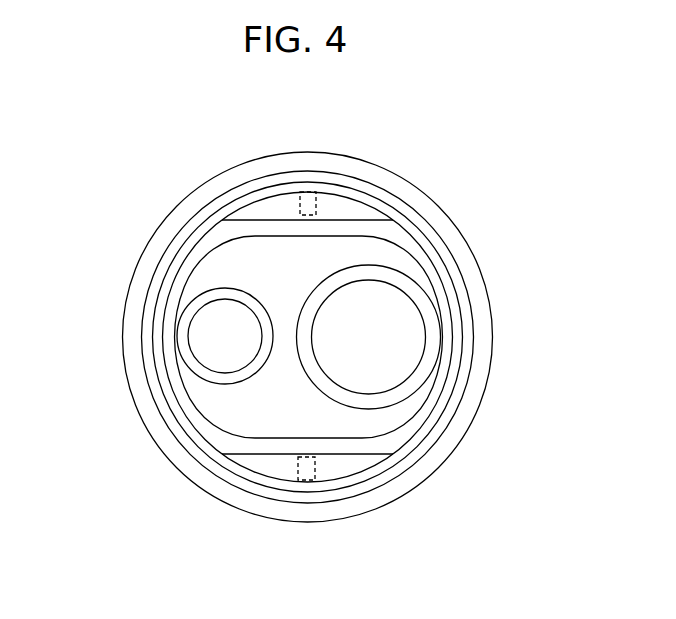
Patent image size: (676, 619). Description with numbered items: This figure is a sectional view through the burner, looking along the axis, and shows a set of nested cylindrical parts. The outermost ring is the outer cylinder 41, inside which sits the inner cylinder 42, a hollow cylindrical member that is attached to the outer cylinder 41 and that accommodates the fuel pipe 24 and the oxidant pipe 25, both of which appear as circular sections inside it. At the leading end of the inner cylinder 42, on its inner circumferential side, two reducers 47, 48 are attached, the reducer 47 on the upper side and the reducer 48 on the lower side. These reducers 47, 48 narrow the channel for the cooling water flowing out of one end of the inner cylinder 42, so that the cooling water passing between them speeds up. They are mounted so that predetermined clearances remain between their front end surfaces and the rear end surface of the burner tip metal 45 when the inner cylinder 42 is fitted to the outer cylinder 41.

The outer cylinder 41 is at (315, 158).
The inner cylinder 42 is at (420, 239).
The burner tip metal 45 is at (215, 273).
The reducer 47 is at (357, 210).
The reducer 48 is at (288, 468).
The fuel pipe 24 is at (182, 332).
The oxidant pipe 25 is at (432, 340).